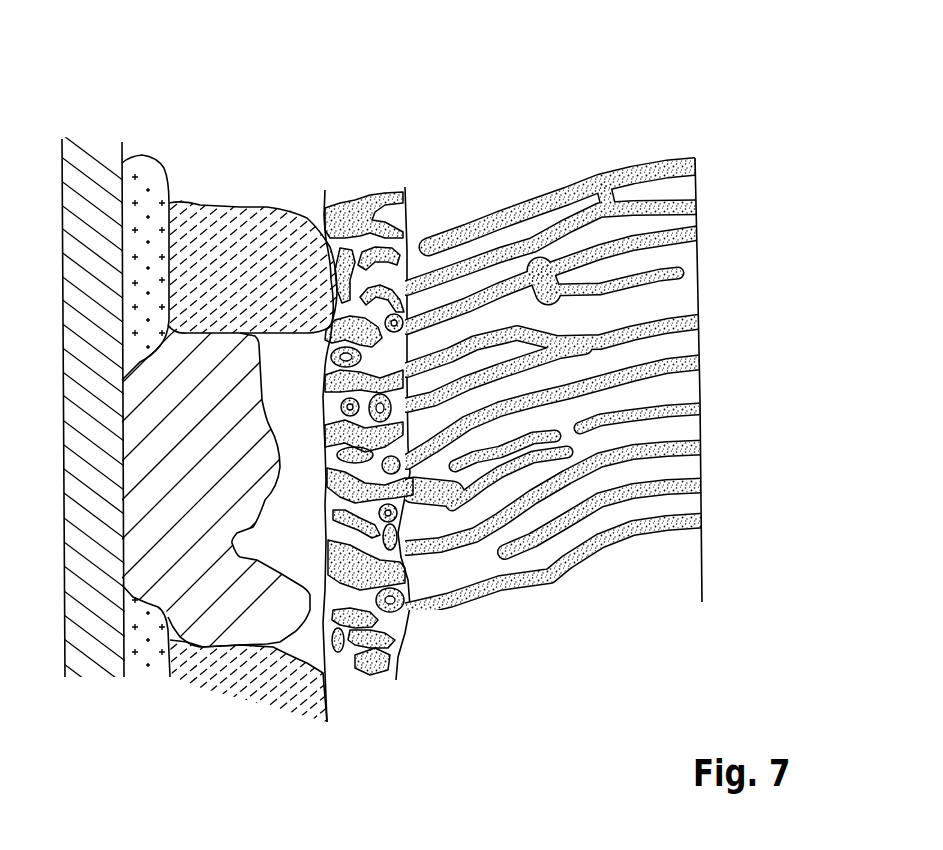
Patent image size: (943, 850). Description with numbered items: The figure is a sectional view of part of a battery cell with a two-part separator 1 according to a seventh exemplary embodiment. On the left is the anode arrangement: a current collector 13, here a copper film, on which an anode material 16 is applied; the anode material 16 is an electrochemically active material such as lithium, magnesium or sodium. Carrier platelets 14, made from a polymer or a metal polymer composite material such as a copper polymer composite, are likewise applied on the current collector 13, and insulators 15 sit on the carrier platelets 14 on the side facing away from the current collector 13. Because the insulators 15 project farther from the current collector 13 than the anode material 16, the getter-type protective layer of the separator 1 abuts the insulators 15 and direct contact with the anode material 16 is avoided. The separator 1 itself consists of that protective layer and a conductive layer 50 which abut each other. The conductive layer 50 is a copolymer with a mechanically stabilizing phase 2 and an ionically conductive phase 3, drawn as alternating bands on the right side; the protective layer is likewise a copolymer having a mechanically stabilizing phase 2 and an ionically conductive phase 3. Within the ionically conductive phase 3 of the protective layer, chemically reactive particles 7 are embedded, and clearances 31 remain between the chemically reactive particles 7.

The separator 1 is at (747, 63).
The mechanically stabilizing phase 2 is at (396, 680).
The ionically conductive phase 3 is at (396, 266).
The chemically reactive particles 7 is at (405, 460).
The current collector 13 is at (87, 163).
The carrier platelets 14 is at (150, 188).
The insulators 15 is at (251, 231).
The anode material 16 is at (217, 377).
The clearances 31 is at (365, 470).
The conductive layer 50 is at (696, 142).